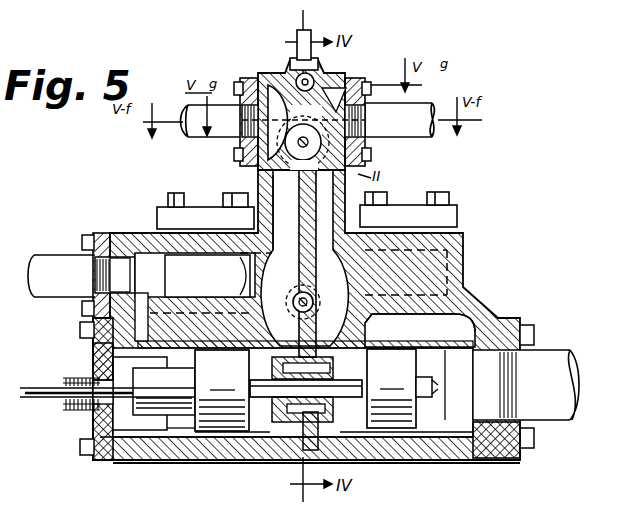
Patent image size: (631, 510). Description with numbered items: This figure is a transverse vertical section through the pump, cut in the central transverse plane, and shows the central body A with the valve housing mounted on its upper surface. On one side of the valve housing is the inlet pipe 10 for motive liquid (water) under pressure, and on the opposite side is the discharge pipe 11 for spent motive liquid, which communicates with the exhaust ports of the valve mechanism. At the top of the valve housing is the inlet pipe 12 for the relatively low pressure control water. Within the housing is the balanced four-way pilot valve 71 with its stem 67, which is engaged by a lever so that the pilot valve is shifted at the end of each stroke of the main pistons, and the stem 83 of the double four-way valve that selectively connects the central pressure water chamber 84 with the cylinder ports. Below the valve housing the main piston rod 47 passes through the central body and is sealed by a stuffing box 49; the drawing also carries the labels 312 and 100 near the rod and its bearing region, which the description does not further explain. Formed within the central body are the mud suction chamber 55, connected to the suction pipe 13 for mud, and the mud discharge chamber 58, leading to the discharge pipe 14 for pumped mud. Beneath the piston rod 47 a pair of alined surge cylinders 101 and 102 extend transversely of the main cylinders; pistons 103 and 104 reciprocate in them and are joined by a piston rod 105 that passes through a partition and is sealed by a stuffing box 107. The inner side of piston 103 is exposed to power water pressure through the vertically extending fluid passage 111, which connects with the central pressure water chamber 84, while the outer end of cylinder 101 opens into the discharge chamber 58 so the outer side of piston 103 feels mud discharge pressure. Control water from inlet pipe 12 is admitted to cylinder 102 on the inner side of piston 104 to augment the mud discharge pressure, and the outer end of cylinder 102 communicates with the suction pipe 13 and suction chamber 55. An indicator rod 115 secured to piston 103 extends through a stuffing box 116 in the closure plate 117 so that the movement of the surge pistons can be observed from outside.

The inlet pipe 12 is at (297, 36).
The stem 67 is at (296, 62).
The balanced four-way pilot valve 71 is at (312, 78).
The discharge pipe 11 is at (194, 139).
The inlet pipe 10 is at (428, 110).
The central pressure water chamber 84 is at (367, 140).
The stem 83 is at (270, 172).
The mud discharge chamber 58 is at (180, 268).
The discharge pipe 14 is at (43, 275).
The central body A is at (465, 234).
The mud suction chamber 55 is at (455, 313).
The fluid passage 111 is at (287, 212).
The rod 312 is at (320, 263).
The stuffing box 49 is at (304, 258).
The piston rod 47 is at (312, 303).
The bearing 100 is at (292, 303).
The closure plate 117 is at (95, 347).
The indicator rod 115 is at (47, 389).
The stuffing box 116 is at (84, 402).
The suction pipe 13 is at (556, 358).
The piston rod 105 is at (350, 384).
The stuffing box 107 is at (332, 402).
The piston 103 is at (213, 432).
The surge cylinder 101 is at (262, 434).
The piston 104 is at (408, 430).
The surge cylinder 102 is at (436, 436).